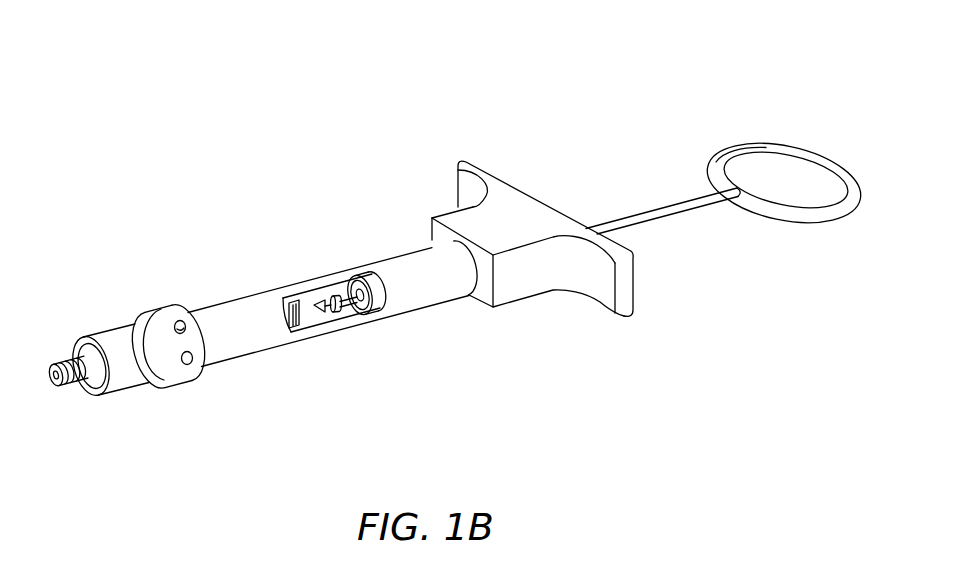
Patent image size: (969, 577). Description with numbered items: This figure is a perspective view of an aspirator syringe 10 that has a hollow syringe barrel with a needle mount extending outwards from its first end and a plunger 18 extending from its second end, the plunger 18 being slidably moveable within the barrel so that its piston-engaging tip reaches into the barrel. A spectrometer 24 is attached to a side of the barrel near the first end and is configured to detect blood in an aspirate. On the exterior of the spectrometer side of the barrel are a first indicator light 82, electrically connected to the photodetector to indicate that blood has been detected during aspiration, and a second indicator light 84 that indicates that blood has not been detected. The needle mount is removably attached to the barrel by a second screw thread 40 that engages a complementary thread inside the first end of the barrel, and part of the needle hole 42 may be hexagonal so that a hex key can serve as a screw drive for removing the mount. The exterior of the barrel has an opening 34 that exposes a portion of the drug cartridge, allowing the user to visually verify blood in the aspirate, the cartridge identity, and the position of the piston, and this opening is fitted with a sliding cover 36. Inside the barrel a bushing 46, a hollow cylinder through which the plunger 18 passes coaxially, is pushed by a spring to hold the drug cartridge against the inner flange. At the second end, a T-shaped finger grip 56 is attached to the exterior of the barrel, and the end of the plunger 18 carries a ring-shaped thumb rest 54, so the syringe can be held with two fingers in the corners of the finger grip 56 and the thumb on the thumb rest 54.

The aspirator syringe 10 is at (798, 74).
The plunger 18 is at (347, 297).
The spectrometer 24 is at (184, 285).
The opening 34 is at (305, 302).
The sliding cover 36 is at (298, 317).
The second screw thread 40 is at (72, 343).
The needle hole 42 is at (52, 382).
The bushing 46 is at (378, 303).
The thumb rest 54 is at (783, 210).
The finger grip 56 is at (628, 285).
The first indicator light 82 is at (163, 312).
The second indicator light 84 is at (186, 364).